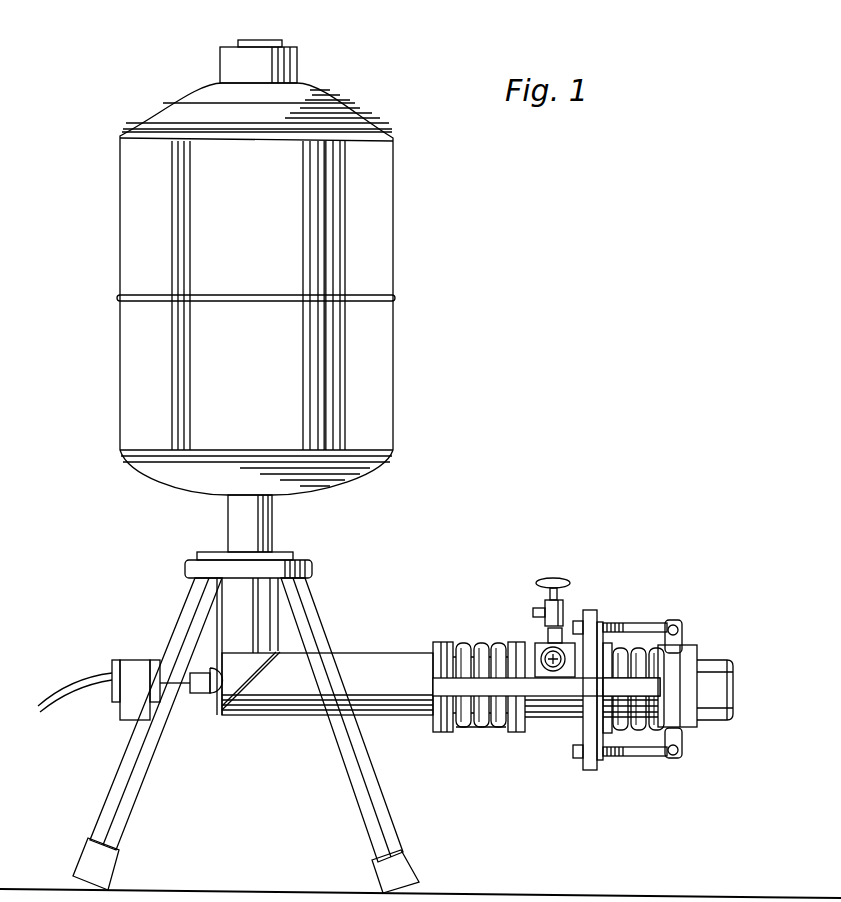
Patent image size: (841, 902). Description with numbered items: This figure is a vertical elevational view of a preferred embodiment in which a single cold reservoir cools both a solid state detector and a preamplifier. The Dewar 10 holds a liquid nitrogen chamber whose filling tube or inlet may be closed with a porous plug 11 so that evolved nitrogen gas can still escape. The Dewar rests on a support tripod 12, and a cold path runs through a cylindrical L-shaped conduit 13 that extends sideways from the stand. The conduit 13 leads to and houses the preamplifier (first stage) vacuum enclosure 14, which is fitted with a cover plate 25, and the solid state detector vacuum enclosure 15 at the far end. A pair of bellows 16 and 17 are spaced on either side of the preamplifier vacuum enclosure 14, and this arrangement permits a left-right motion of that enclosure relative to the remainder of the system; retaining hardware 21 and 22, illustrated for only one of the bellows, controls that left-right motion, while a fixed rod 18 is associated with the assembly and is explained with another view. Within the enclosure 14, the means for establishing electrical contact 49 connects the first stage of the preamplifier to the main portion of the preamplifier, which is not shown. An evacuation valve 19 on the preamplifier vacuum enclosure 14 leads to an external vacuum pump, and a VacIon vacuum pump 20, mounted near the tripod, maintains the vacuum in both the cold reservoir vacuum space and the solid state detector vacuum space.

The pressure tank 10 is at (394, 216).
The porous plug 11 is at (218, 63).
The support tripod 12 is at (298, 611).
The cylindrical L-shaped conduit 13 is at (391, 665).
The preamplifier (first stage) vacuum enclosure 14 is at (537, 648).
The solid state detector vacuum enclosure 15 is at (714, 666).
The bellows 16 is at (630, 733).
The bellows 17 is at (480, 645).
The fixed rod 18 is at (521, 688).
The evacuation valve 19 is at (553, 580).
The VacIon vacuum pump 20 is at (138, 660).
The retaining hardware 21 is at (656, 757).
The retaining hardware 22 is at (645, 625).
The cover plate 25 is at (568, 640).
The means for establishing electrical contact 49 is at (553, 678).